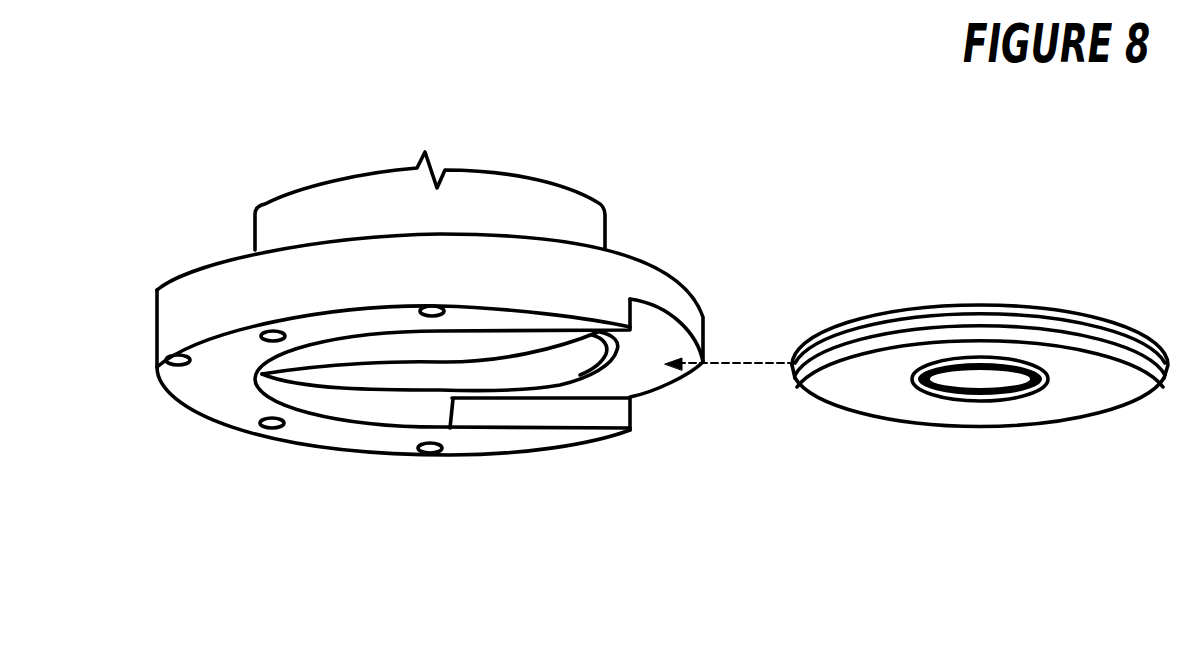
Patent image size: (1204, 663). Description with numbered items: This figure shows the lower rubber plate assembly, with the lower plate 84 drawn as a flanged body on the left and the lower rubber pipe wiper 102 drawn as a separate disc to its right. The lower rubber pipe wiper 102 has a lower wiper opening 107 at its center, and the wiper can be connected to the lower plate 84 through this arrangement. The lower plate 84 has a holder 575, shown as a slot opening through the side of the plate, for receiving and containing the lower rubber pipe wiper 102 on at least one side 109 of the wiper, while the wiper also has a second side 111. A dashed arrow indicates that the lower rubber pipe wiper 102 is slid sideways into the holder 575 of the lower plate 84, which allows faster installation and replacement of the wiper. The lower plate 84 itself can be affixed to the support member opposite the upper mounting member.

The lower plate 84 is at (188, 307).
The side of the lower rubber pipe wiper 109 is at (547, 416).
The second side of the lower rubber pipe wiper 111 is at (516, 340).
The holder 575 is at (691, 395).
The lower rubber pipe wiper 102 is at (1014, 412).
The lower wiper opening 107 is at (979, 395).